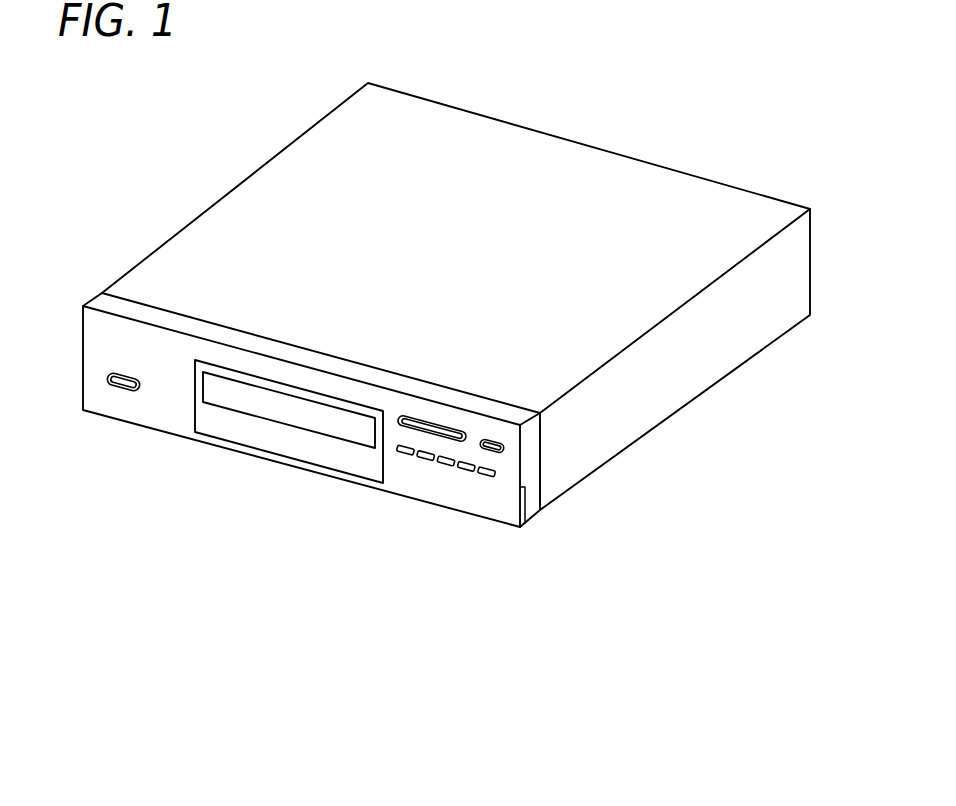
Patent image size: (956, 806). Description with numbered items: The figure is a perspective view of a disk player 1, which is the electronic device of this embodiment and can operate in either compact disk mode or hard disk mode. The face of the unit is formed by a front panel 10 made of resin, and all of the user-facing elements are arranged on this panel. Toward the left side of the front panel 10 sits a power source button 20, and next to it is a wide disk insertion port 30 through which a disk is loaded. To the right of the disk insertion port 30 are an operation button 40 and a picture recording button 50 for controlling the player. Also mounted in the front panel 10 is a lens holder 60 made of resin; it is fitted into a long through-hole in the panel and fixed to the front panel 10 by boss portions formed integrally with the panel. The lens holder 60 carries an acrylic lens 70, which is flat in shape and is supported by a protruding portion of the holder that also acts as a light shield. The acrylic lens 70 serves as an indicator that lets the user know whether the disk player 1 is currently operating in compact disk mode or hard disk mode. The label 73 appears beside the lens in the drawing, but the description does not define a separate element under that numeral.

The disk player 1 is at (603, 128).
The front panel 10 is at (152, 350).
The power source button 20 is at (115, 386).
The disk insertion port 30 is at (295, 412).
The operation button 40 is at (432, 466).
The picture recording button 50 is at (507, 453).
The lens holder 60 is at (417, 432).
The acrylic lens 70 is at (455, 440).
The cover plate 73 is at (479, 599).